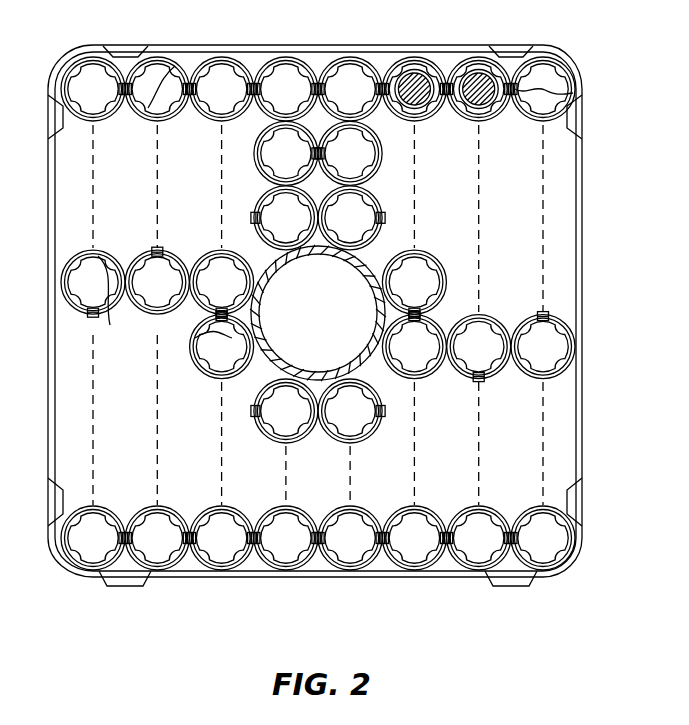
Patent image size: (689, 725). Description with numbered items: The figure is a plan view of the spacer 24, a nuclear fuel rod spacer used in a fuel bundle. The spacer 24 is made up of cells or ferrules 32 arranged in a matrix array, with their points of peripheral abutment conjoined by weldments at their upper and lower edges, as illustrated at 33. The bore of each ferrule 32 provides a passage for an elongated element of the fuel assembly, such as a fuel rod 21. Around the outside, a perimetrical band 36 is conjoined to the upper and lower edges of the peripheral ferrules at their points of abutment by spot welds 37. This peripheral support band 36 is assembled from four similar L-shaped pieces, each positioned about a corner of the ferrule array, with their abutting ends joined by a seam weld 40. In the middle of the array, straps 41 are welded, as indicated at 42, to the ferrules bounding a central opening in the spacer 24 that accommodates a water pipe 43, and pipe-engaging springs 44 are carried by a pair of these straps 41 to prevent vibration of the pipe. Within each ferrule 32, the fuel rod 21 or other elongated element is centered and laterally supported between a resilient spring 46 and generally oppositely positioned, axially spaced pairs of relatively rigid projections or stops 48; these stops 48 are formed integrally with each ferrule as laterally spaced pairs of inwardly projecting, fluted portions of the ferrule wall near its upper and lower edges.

The fuel rod 21 is at (480, 72).
The spacer 24 is at (597, 333).
The ferrule 32 is at (500, 122).
The weldment 33 is at (252, 58).
The perimetrical band 36 is at (581, 268).
The spot weld 37 is at (354, 54).
The seam weld 40 is at (355, 54).
The strap 41 is at (403, 260).
The weld 42 is at (258, 250).
The water pipe 43 is at (310, 256).
The pipe-engaging spring 44 is at (376, 374).
The resilient spring 46 is at (573, 93).
The stop 48 is at (165, 100).